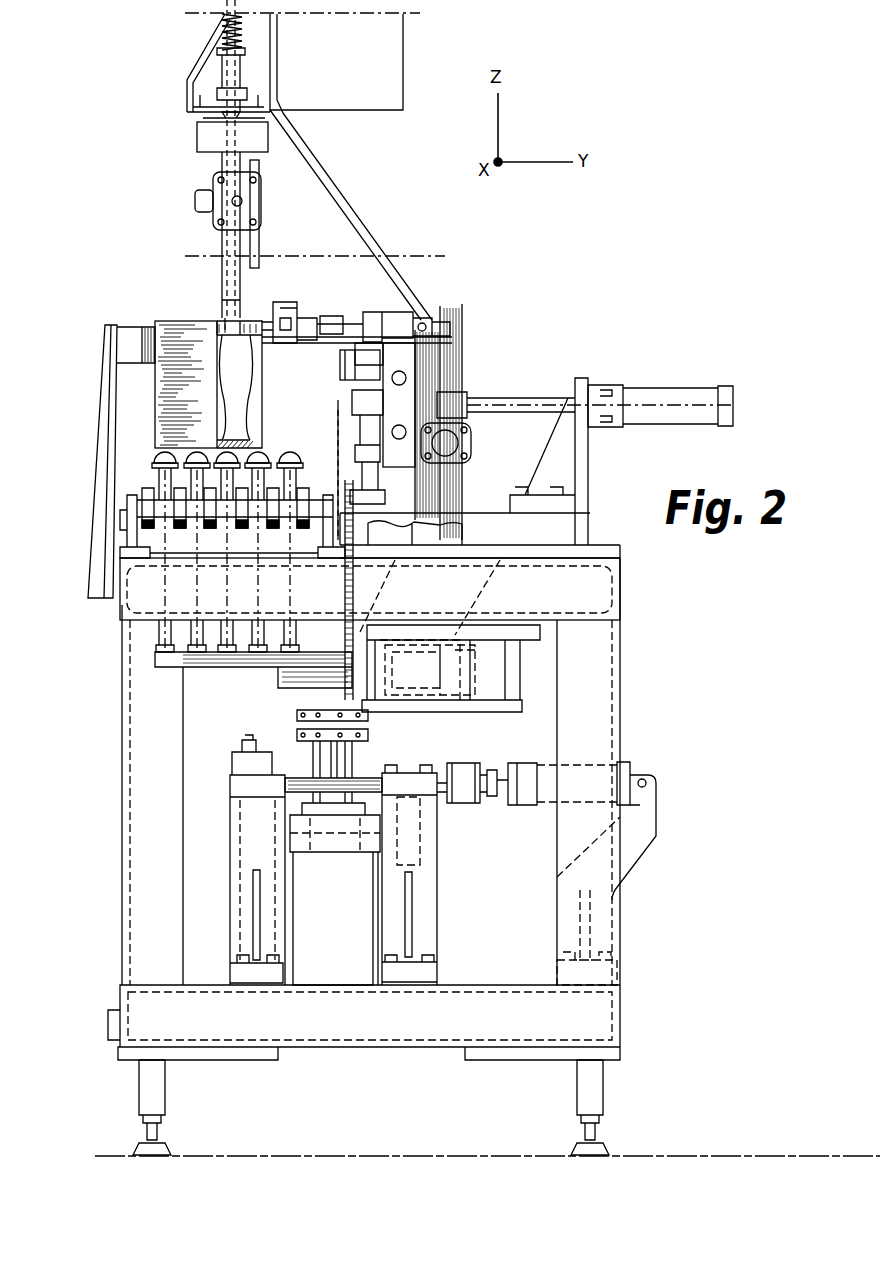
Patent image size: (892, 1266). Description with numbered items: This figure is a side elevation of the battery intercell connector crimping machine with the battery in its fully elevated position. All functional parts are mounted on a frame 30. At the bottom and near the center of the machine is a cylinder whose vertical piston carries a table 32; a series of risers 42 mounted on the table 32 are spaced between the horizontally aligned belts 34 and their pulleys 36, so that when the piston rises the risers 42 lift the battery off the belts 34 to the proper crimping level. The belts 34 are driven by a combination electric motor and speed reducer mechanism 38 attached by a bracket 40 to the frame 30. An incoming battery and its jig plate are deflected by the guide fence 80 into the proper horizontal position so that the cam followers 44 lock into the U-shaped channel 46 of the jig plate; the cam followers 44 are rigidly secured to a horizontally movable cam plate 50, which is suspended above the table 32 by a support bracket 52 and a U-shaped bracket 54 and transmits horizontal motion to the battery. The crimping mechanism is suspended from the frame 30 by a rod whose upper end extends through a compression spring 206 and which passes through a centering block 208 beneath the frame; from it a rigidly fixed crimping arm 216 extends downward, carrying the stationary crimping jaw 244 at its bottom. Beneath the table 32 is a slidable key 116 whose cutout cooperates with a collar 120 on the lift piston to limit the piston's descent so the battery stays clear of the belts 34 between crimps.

The compression spring 206 is at (222, 20).
The centering block 208 is at (197, 137).
The crimping arm 216 is at (226, 280).
The stationary crimping jaw 244 is at (262, 325).
The guide fence 80 is at (106, 360).
The cam followers 44 is at (217, 361).
The U-shaped channel 46 is at (280, 336).
The cam plate 50 is at (312, 345).
The risers 42 is at (303, 450).
The belts 34 is at (149, 490).
The pulleys 36 is at (332, 490).
The U-shaped bracket 54 is at (580, 479).
The support bracket 52 is at (455, 590).
The frame 30 is at (603, 655).
The bracket 40 is at (522, 692).
The combination electric motor and speed reducer mechanism 38 is at (458, 694).
The table 32 is at (240, 667).
The collar 120 is at (295, 737).
The slidable key 116 is at (300, 783).